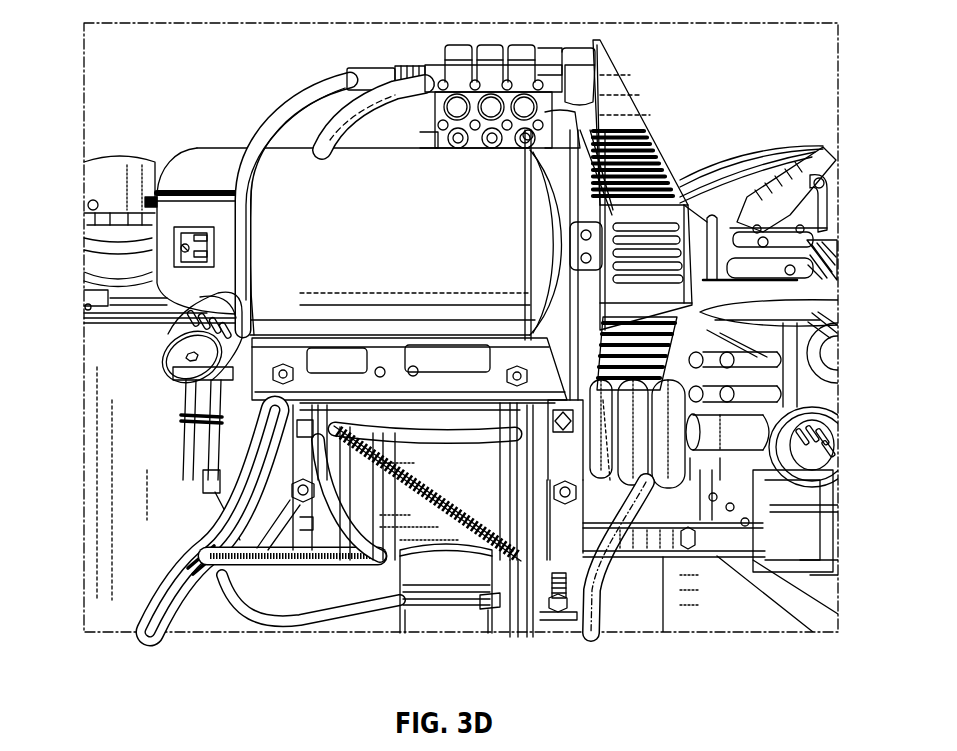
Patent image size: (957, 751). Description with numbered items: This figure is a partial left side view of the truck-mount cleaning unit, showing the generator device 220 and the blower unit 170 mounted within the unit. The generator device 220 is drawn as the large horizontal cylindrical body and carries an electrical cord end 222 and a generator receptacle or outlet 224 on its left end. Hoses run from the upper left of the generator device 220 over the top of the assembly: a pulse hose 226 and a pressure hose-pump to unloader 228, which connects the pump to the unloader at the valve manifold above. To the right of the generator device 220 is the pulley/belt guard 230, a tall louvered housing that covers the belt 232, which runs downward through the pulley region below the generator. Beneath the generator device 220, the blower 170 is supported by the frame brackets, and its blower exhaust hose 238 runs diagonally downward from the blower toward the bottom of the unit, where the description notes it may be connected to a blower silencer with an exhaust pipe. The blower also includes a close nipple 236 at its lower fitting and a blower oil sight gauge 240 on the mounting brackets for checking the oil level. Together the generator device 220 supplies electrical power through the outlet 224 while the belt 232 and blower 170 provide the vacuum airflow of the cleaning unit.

The blower unit 170 is at (435, 478).
The generator device 220 is at (282, 257).
The electrical cord end 222 is at (178, 358).
The generator receptacle or outlet 224 is at (184, 257).
The pulse hose 226 is at (263, 128).
The pressure hose-pump to unloader 228 is at (333, 110).
The pulley/belt guard 230 is at (623, 124).
The belt 232 is at (597, 420).
The close nipple 236 is at (450, 604).
The blower exhaust hose 238 is at (427, 622).
The blower oil sight gauge 240 is at (302, 494).